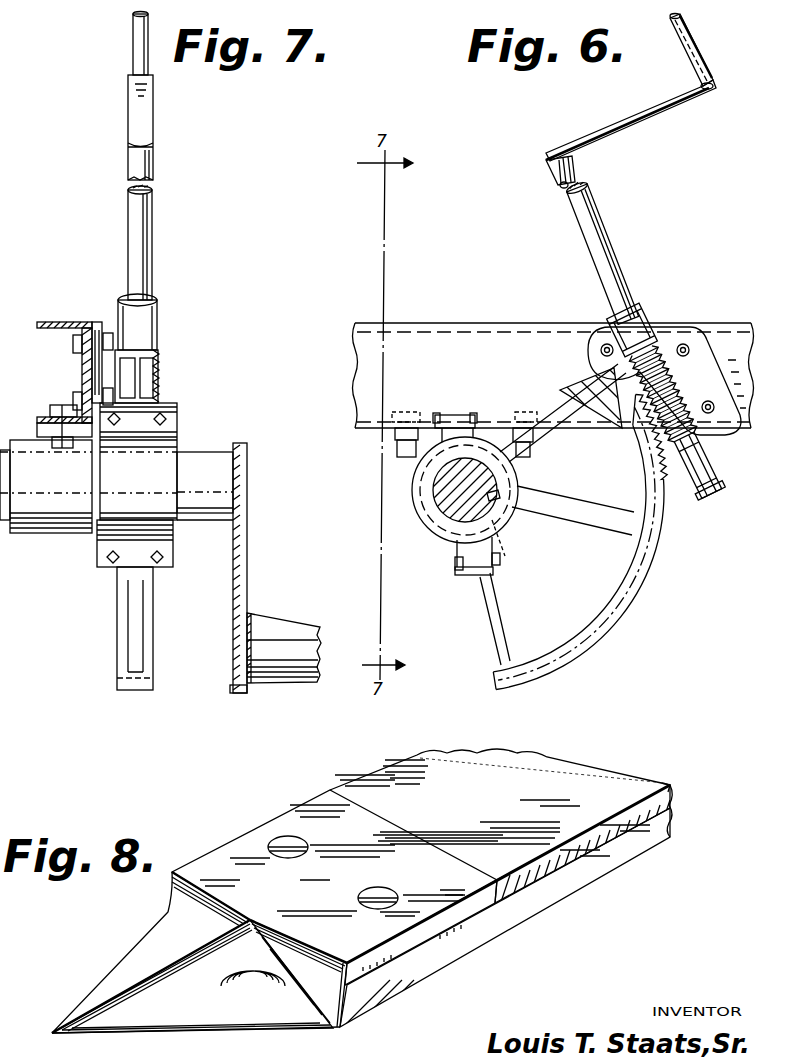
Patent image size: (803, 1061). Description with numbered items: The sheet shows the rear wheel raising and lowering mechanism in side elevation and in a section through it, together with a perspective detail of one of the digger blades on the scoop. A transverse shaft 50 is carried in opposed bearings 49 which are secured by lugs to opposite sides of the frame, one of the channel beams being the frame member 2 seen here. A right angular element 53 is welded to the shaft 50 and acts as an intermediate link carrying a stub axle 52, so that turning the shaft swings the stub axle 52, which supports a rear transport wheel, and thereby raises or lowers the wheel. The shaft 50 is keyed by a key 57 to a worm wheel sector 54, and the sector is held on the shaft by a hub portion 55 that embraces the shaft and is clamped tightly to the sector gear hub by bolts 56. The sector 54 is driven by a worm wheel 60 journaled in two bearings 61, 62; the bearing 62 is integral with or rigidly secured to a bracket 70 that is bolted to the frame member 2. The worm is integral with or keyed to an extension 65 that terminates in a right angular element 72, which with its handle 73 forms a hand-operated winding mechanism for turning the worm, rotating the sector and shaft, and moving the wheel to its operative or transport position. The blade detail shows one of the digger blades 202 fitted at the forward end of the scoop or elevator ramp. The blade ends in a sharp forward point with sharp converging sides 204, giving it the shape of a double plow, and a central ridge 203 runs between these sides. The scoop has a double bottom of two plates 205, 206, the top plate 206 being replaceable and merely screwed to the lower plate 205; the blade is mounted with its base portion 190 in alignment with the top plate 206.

In FIG. 7, the frame member 2 is at (45, 330).
In FIG. 6, the frame member 2 is at (488, 343).
In FIG. 7, the bearings 49 is at (45, 530).
In FIG. 6, the bearings 49 is at (450, 535).
In FIG. 7, the transverse shaft 50 is at (205, 515).
In FIG. 6, the transverse shaft 50 is at (445, 507).
In FIG. 7, the stub axles 52 is at (283, 628).
In FIG. 7, the right angular element 53 is at (247, 562).
In FIG. 7, the worm wheel sector 54 is at (127, 620).
In FIG. 6, the worm wheel sector 54 is at (570, 525).
In FIG. 7, the hub portion 55 is at (140, 486).
In FIG. 6, the hub portion 55 is at (415, 505).
In FIG. 7, the bolts 56 is at (168, 418).
In FIG. 6, the bolts 56 is at (500, 560).
In FIG. 6, the key 57 is at (500, 503).
In FIG. 7, the worm wheel 60 is at (162, 378).
In FIG. 6, the worm wheel 60 is at (660, 345).
In FIG. 7, the bearing 61 is at (157, 313).
In FIG. 6, the bearing 61 is at (608, 320).
In FIG. 6, the bearing 62 is at (712, 460).
In FIG. 7, the extension 65 is at (150, 243).
In FIG. 6, the extension 65 is at (617, 258).
In FIG. 7, the bracket 70 is at (97, 322).
In FIG. 6, the bracket 70 is at (710, 362).
In FIG. 7, the right angular element 72 is at (135, 110).
In FIG. 6, the right angular element 72 is at (650, 110).
In FIG. 7, the handle 73 is at (133, 34).
In FIG. 6, the handle 73 is at (695, 50).
In FIG. 8, the base portion 190 is at (440, 933).
In FIG. 8, the digger blades 202 is at (318, 893).
In FIG. 8, the central ridge 203 is at (147, 977).
In FIG. 8, the converging sides 204 is at (100, 980).
In FIG. 8, the plate 205 is at (600, 873).
In FIG. 8, the top plate 206 is at (673, 783).